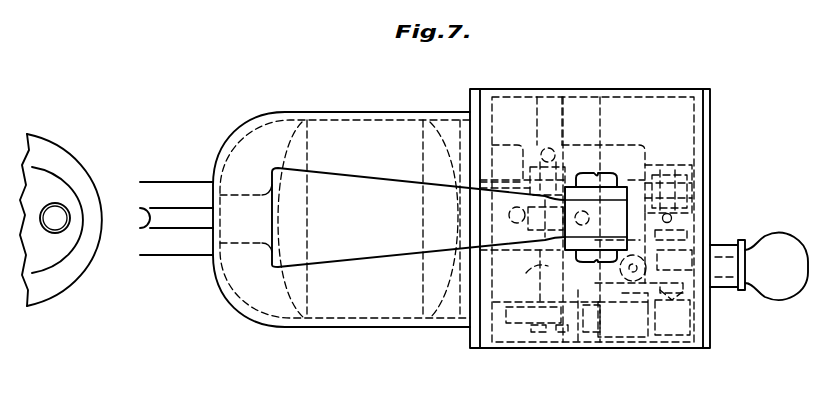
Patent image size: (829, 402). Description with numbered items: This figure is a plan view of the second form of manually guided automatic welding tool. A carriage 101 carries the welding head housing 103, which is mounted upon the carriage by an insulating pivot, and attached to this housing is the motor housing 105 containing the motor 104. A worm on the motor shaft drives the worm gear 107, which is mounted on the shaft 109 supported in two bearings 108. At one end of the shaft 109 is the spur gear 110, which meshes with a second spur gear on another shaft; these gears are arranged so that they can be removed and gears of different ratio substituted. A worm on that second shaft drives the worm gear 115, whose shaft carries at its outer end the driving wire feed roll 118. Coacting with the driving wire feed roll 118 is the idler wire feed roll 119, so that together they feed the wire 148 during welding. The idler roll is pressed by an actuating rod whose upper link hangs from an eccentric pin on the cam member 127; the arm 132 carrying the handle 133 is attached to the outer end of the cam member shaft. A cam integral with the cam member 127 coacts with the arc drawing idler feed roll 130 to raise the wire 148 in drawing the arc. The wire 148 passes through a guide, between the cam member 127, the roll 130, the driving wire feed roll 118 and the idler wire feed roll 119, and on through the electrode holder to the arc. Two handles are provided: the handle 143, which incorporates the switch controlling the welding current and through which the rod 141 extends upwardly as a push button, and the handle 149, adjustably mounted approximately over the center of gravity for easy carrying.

The carriage 101 is at (168, 190).
The welding head housing 103 is at (590, 218).
The motor 104 is at (343, 300).
The motor housing 105 is at (379, 111).
The worm gear 107 is at (566, 223).
The bearings 108 is at (580, 105).
The shaft 109 is at (532, 279).
The spur gear 110 is at (523, 313).
The worm gear 115 is at (557, 146).
The driving wire feed roll 118 is at (675, 175).
The idler wire feed roll 119 is at (682, 295).
The cam member 127 is at (667, 297).
The arc drawing idler feed roll 130 is at (680, 190).
The arm 132 is at (727, 245).
The handle 133 is at (769, 276).
The rod 141 is at (57, 212).
The handle 143 is at (91, 190).
The wire 148 is at (672, 220).
The handle 149 is at (444, 217).